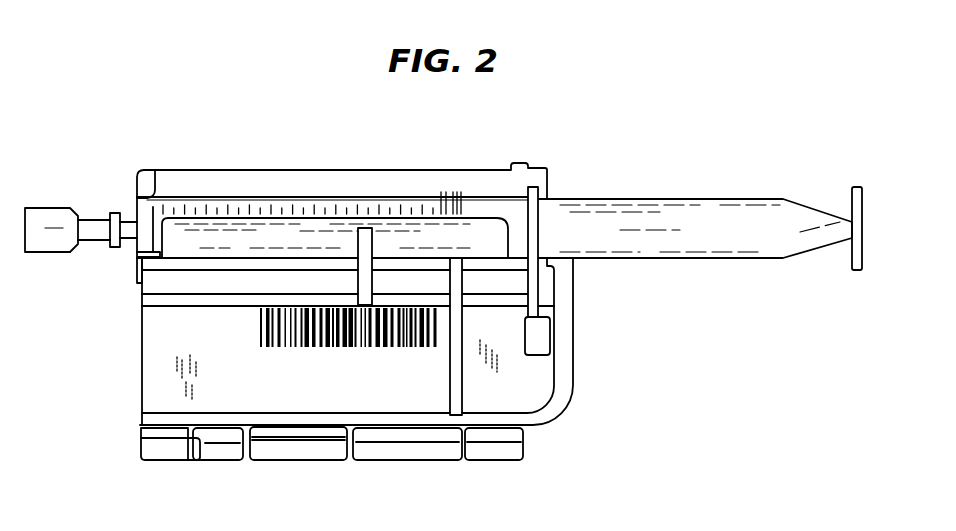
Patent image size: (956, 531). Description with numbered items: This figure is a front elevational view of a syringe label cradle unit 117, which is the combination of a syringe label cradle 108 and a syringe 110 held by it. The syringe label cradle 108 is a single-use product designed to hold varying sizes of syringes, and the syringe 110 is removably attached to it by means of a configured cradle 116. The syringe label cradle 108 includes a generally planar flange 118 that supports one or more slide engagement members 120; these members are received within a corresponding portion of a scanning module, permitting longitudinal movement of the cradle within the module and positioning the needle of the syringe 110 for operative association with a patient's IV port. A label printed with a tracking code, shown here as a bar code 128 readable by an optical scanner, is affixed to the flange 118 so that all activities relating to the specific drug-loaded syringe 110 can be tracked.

The syringe label cradle (SLC) 108 is at (573, 397).
The syringe 110 is at (282, 200).
The cradle 116 is at (477, 240).
The syringe label cradle unit (SLCU) 117 is at (137, 168).
The flange 118 is at (152, 387).
The slide engagement members 120 is at (165, 453).
The bar code 128 is at (442, 327).